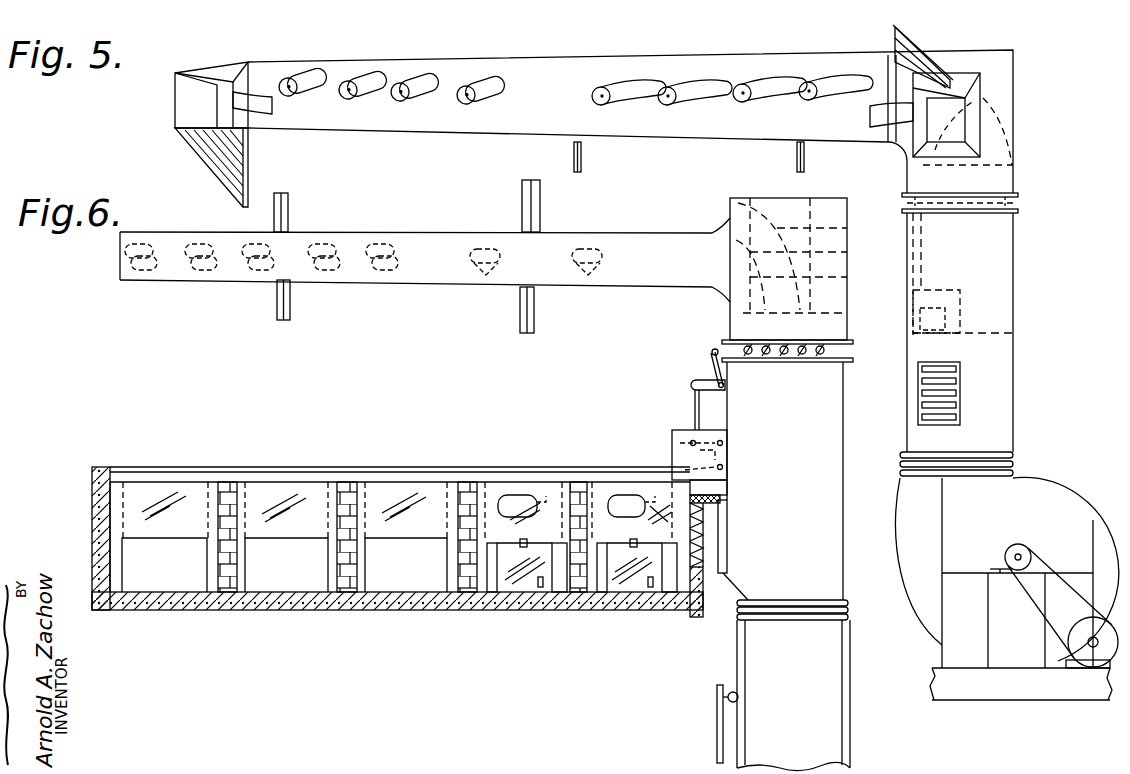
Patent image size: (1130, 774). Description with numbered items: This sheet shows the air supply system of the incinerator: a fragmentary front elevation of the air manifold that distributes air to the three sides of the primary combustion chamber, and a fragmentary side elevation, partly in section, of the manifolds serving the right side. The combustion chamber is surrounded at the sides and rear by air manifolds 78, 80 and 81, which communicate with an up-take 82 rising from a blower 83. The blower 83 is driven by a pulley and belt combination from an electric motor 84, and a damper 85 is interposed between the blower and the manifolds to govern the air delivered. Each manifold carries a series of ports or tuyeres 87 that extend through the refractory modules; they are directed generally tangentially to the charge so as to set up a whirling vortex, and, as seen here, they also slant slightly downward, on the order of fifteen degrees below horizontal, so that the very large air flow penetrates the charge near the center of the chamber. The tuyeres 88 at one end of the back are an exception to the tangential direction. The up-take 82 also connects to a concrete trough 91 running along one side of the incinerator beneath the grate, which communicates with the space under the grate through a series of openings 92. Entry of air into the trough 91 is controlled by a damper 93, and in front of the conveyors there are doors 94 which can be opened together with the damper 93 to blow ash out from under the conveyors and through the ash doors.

In FIG. 5, the air manifold 78 is at (232, 74).
In FIG. 5, the air manifold 80 is at (553, 72).
In FIG. 6, the air manifold 80 is at (787, 200).
In FIG. 5, the air manifold 81 is at (972, 113).
In FIG. 6, the air manifold 81 is at (445, 270).
In FIG. 5, the up-take 82 is at (1003, 262).
In FIG. 6, the up-take 82 is at (830, 418).
In FIG. 5, the blower 83 is at (1040, 492).
In FIG. 5, the electric motor 84 is at (1082, 662).
In FIG. 5, the damper 85 is at (1018, 206).
In FIG. 6, the damper 85 is at (722, 344).
In FIG. 5, the ports or tuyeres 87 is at (478, 98).
In FIG. 6, the ports or tuyeres 87 is at (385, 245).
In FIG. 5, the tuyeres 88 is at (289, 86).
In FIG. 6, the concrete trough 91 is at (195, 490).
In FIG. 6, the openings 92 is at (160, 573).
In FIG. 5, the damper 93 is at (950, 386).
In FIG. 6, the damper 93 is at (703, 530).
In FIG. 5, the doors 94 is at (960, 318).
In FIG. 6, the doors 94 is at (525, 580).